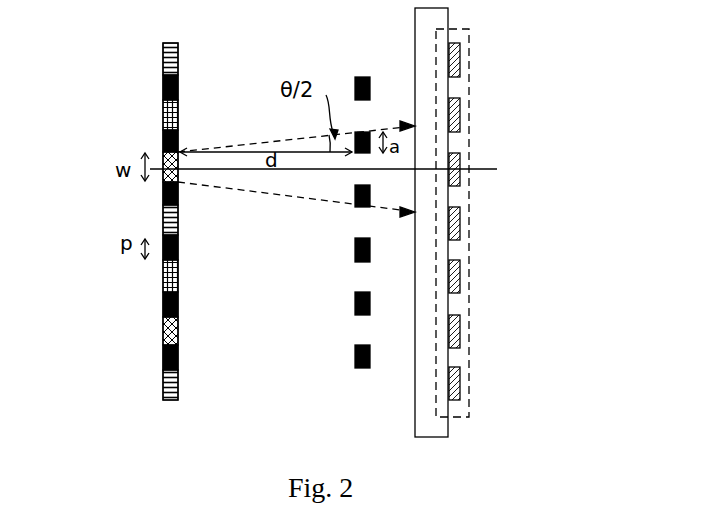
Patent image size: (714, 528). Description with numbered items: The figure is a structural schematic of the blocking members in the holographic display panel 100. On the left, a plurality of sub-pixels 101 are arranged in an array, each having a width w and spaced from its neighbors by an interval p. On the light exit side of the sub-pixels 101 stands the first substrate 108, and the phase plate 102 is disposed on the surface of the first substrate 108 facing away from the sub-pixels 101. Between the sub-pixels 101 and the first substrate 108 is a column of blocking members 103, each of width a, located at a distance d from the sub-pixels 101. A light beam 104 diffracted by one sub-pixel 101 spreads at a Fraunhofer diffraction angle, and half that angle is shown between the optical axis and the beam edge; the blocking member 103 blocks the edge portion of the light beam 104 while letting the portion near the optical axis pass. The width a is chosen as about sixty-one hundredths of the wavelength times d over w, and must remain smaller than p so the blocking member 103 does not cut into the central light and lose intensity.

The holographic display panel 100 is at (102, 20).
The sub-pixels 101 is at (163, 153).
The phase plate 102 is at (470, 47).
The blocking member 103 is at (355, 78).
The light beam 104 is at (278, 194).
The first substrate 108 is at (415, 397).